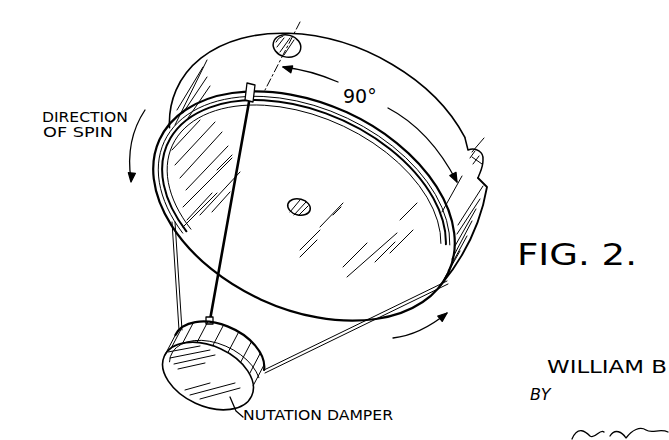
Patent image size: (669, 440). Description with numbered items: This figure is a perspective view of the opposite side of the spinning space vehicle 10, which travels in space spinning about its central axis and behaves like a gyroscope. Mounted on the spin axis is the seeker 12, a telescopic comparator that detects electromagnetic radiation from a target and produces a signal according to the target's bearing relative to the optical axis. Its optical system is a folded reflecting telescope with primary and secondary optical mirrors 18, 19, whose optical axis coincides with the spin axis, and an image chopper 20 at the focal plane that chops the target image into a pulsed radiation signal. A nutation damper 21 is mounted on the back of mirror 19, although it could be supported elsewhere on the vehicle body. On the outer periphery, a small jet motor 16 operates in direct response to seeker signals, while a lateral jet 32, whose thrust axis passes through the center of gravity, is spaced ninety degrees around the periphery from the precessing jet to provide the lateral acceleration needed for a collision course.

The space vehicle 10 is at (152, 72).
The seeker 12 is at (288, 183).
The jet motor 16 is at (483, 161).
The primary optical mirror 18 is at (213, 218).
The secondary optical mirror 19 is at (287, 330).
The image chopper 20 is at (310, 201).
The nutation damper 21 is at (183, 378).
The lateral jet 32 is at (296, 40).